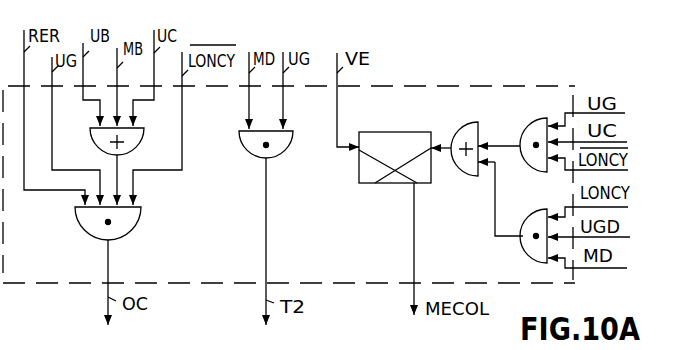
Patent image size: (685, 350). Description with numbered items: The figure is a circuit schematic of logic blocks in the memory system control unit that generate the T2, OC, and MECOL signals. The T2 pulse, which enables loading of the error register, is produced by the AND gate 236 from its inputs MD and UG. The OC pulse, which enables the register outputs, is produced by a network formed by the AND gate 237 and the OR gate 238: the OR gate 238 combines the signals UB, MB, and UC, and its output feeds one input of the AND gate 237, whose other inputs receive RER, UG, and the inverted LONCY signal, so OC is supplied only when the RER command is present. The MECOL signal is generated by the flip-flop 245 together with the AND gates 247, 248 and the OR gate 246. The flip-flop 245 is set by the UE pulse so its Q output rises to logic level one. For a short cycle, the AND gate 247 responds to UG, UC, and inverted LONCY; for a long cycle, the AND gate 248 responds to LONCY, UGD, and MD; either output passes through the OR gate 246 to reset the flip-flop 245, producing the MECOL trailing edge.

The AND gate 236 is at (279, 151).
The AND gate 237 is at (134, 228).
The OR gate 238 is at (138, 146).
The flip-flop 245 is at (392, 132).
The OR gate 246 is at (462, 174).
The AND gate 247 is at (531, 121).
The AND gate 248 is at (527, 252).